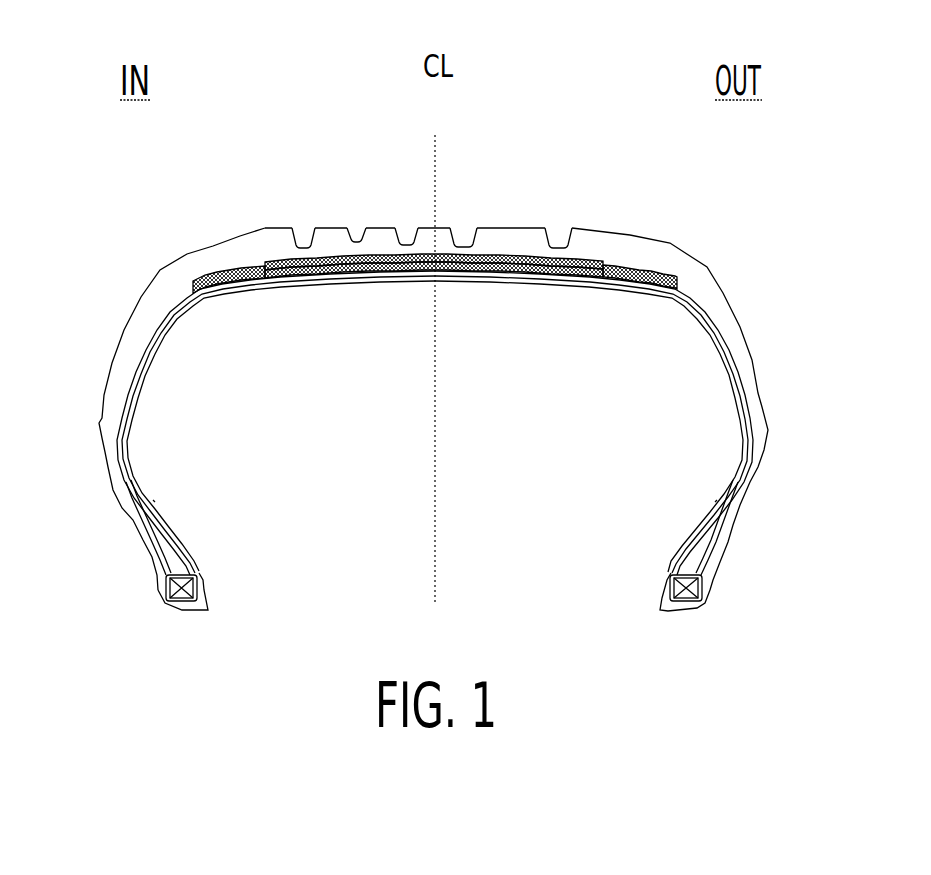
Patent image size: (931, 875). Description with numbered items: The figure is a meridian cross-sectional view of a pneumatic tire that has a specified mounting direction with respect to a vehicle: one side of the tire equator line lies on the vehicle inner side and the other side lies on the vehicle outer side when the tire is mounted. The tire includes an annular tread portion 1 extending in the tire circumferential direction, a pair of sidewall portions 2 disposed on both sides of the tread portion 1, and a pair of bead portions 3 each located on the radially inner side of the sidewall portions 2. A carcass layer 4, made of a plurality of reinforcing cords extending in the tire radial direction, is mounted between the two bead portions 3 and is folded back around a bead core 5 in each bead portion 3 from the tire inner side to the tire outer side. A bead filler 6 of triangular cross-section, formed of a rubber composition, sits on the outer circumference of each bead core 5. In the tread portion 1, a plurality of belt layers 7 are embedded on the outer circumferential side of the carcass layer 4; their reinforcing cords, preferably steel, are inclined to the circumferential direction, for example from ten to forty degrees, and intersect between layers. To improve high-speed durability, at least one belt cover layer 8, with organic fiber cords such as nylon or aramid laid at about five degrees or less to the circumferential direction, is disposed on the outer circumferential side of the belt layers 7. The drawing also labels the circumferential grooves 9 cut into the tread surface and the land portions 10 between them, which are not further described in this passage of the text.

The tread portion 1 is at (540, 168).
The sidewall portions 2 is at (767, 375).
The bead portions 3 is at (720, 586).
The carcass layer 4 is at (645, 285).
The bead core 5 is at (672, 586).
The bead filler 6 is at (717, 500).
The belt layers 7 is at (600, 282).
The belt cover layer 8 is at (657, 278).
The main groove 9 is at (558, 244).
The land portion 10 is at (590, 229).